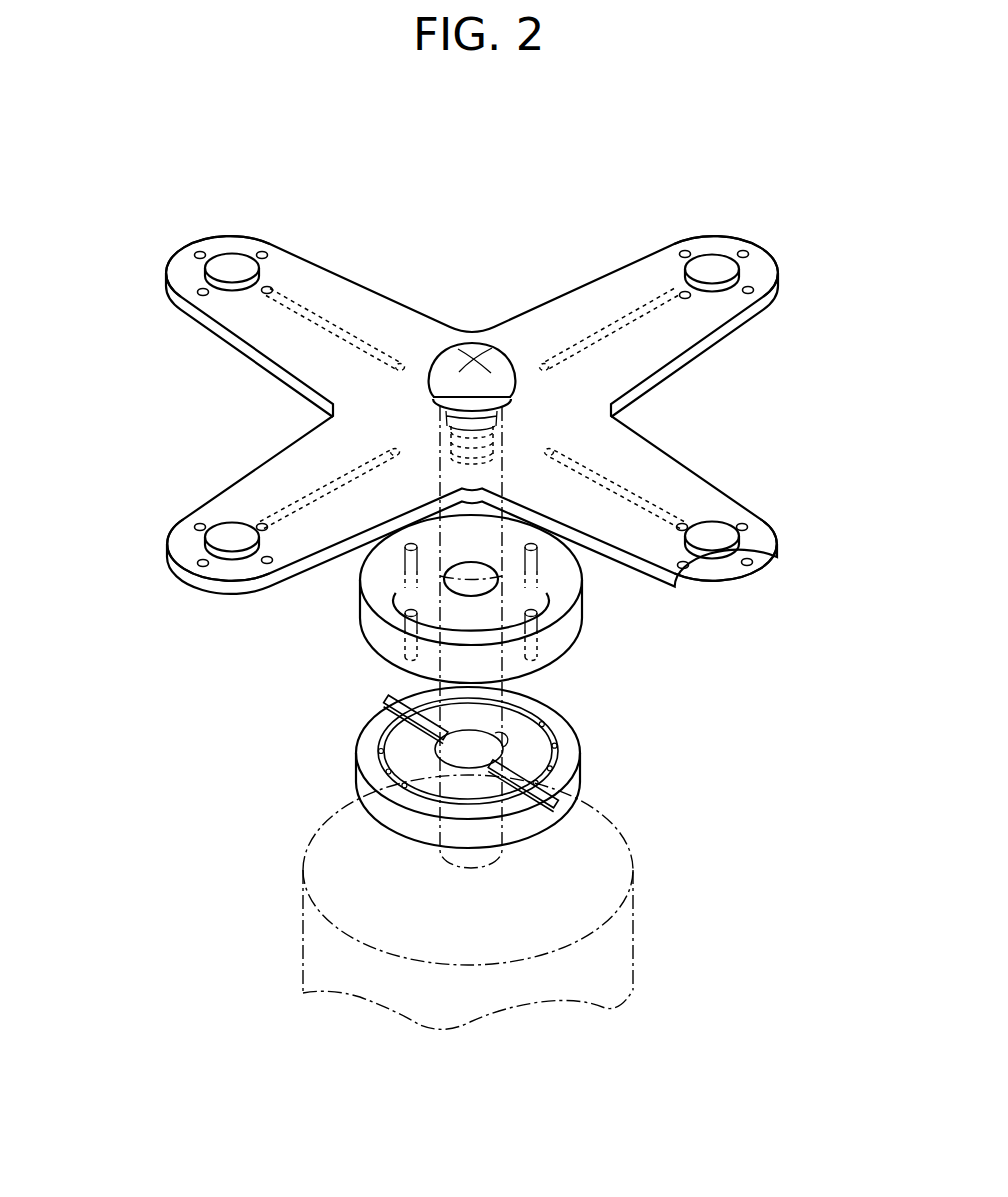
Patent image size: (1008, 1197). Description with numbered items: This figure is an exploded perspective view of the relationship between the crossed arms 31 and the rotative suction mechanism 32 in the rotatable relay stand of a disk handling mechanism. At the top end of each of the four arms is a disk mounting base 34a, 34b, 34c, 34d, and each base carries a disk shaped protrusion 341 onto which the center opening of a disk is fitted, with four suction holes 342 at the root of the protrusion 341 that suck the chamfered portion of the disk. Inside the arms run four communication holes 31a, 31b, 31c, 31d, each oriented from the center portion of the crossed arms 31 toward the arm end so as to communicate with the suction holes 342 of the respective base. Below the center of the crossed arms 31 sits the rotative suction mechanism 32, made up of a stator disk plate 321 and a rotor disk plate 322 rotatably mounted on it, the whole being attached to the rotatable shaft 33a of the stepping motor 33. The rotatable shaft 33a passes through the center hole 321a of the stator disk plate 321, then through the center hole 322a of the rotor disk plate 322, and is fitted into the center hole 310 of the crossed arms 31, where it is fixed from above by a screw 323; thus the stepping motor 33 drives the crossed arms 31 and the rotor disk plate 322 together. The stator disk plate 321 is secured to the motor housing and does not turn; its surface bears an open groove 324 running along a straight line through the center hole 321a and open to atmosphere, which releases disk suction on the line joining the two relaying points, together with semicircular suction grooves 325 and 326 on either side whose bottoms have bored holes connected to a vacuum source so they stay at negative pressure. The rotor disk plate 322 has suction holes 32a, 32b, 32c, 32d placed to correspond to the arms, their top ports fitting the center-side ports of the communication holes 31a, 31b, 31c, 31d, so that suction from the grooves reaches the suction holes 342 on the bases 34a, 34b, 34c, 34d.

The crossed arms 31 is at (493, 238).
The communication hole 31a is at (343, 323).
The communication hole 31b is at (323, 480).
The communication hole 31c is at (663, 490).
The communication hole 31d is at (622, 337).
The center hole 310 is at (612, 412).
The rotative suction mechanism 32 is at (306, 660).
The stator disk plate 321 is at (477, 796).
The center hole 321a is at (500, 735).
The rotor disk plate 322 is at (481, 637).
The center hole 322a is at (472, 566).
The suction hole 32a is at (403, 567).
The suction hole 32b is at (405, 640).
The suction hole 32c is at (540, 647).
The suction hole 32d is at (547, 563).
The screw 323 is at (472, 342).
The open groove 324 is at (388, 766).
The suction groove 325 is at (552, 748).
The suction groove 326 is at (385, 771).
The stepping motor 33 is at (617, 975).
The rotatable shaft 33a is at (520, 740).
The disk mounting base 34a is at (150, 272).
The disk mounting base 34b is at (204, 612).
The disk mounting base 34c is at (796, 567).
The disk mounting base 34d is at (786, 238).
The disk shaped protrusion 341 is at (242, 262).
The suction hole 342 is at (198, 253).